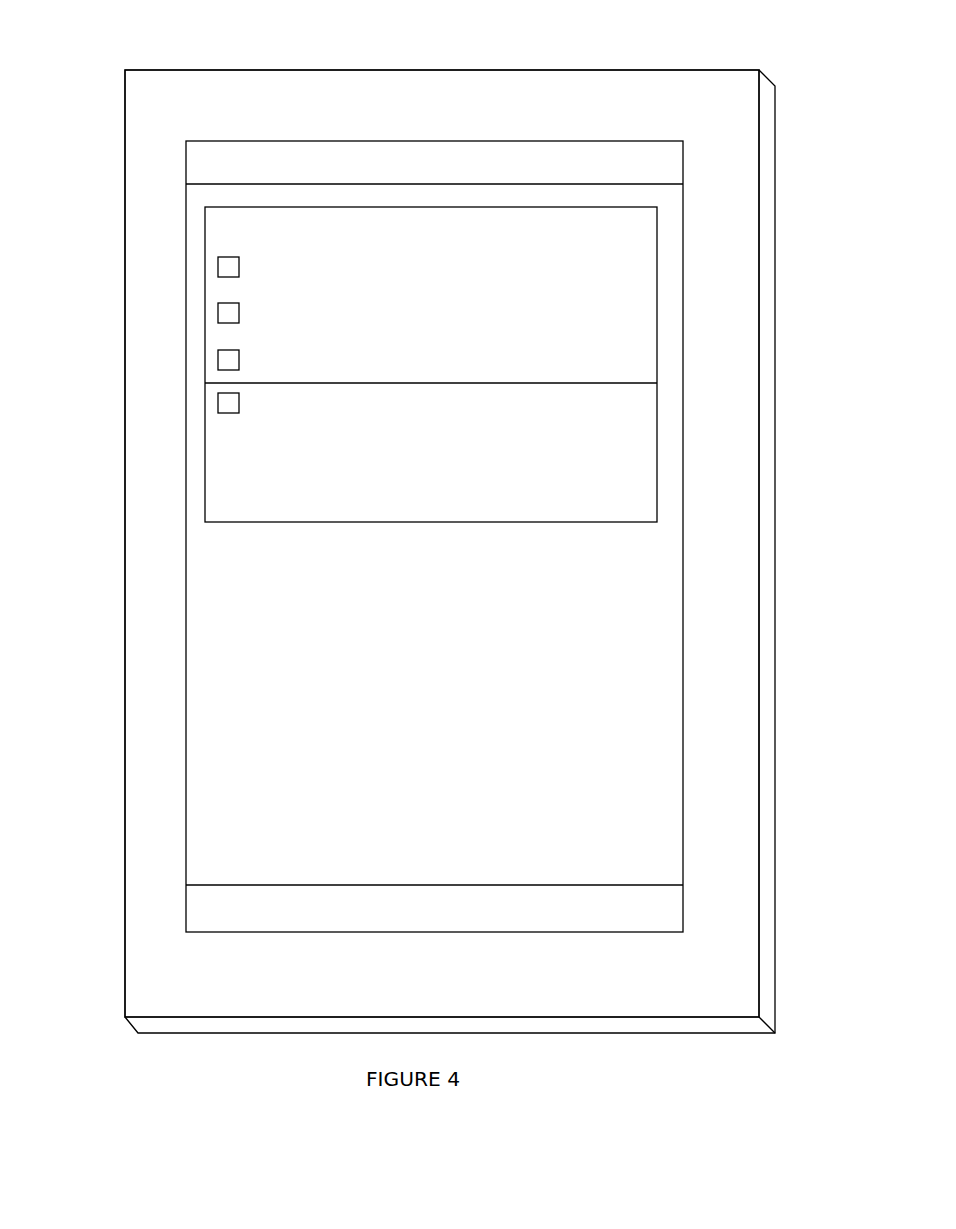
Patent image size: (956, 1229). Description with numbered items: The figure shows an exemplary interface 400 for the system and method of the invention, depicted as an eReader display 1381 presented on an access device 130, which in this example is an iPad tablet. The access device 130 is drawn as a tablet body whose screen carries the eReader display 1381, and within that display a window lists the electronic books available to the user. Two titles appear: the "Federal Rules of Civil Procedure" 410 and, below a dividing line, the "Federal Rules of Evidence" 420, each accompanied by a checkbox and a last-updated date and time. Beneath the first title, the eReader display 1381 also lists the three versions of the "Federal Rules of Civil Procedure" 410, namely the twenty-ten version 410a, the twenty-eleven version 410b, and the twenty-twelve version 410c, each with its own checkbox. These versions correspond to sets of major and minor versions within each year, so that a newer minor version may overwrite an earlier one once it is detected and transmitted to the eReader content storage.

The interface 400 is at (346, 39).
The access device 130 is at (733, 70).
The eReader display 1381 is at (684, 200).
The Federal Rules of Civil Procedure 410 is at (217, 212).
The 2010 version 410a is at (217, 263).
The 2011 version 410b is at (217, 308).
The 2012 version 410c is at (217, 353).
The Federal Rules of Evidence 420 is at (217, 397).